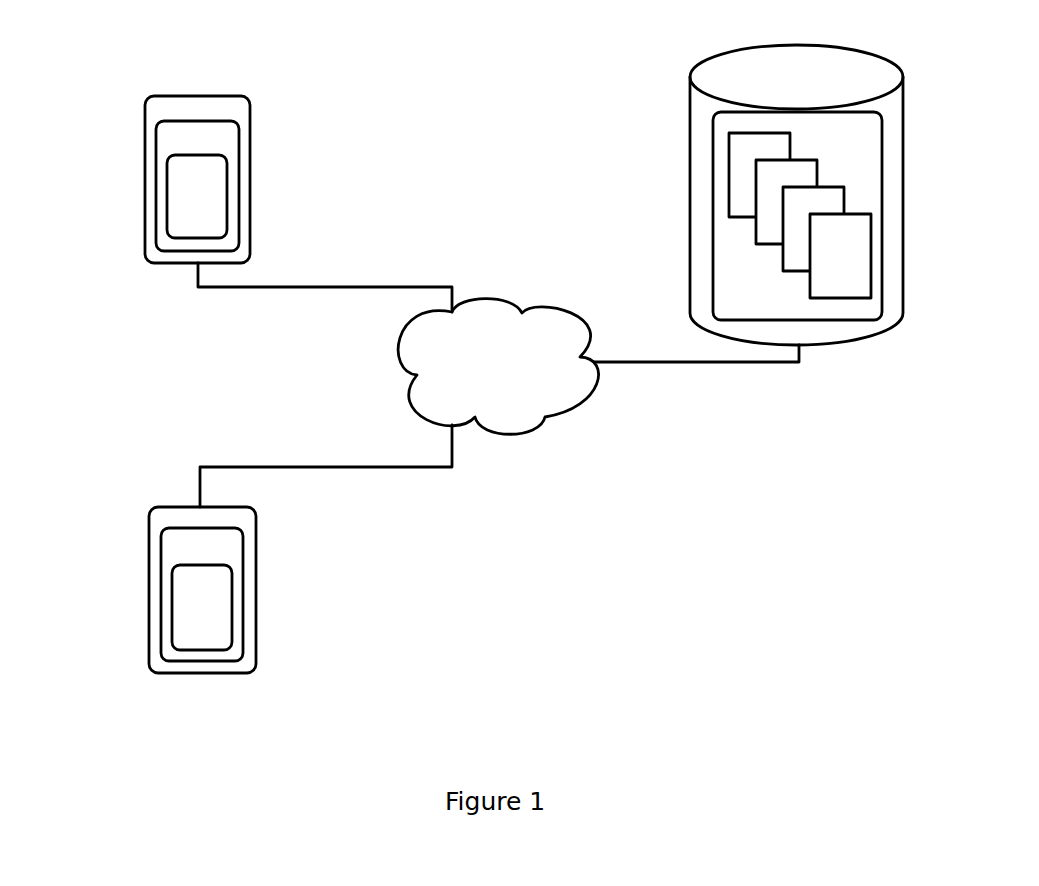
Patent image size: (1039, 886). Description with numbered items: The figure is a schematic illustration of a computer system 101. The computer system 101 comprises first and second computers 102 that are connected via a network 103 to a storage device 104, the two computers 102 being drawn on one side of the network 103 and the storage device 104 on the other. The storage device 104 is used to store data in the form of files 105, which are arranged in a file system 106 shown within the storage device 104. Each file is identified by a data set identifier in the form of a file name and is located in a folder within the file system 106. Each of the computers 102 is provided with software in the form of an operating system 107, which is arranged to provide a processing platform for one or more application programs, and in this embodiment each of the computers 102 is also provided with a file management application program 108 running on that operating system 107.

The computer system 101 is at (667, 598).
The computers 102 is at (145, 178).
The network 103 is at (543, 418).
The storage device 104 is at (903, 195).
The files 105 is at (840, 298).
The file system 106 is at (713, 218).
The operating system 107 is at (240, 183).
The file management application program 108 is at (195, 156).